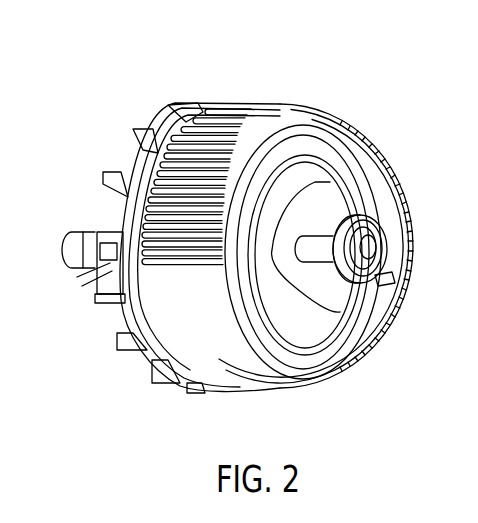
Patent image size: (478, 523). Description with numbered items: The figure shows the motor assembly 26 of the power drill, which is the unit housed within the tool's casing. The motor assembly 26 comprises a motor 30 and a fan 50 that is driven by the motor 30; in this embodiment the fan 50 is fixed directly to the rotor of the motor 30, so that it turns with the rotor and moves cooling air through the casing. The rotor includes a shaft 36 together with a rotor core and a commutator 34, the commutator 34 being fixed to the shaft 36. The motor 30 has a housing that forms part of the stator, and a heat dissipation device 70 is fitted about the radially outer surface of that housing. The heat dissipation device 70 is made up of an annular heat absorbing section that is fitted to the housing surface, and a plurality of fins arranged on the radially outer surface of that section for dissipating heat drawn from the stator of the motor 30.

The motor assembly 26 is at (340, 95).
The heat dissipation device 70 is at (252, 106).
The motor 30 is at (328, 308).
The shaft 36 is at (62, 235).
The commutator 34 is at (110, 265).
The fan 50 is at (128, 338).